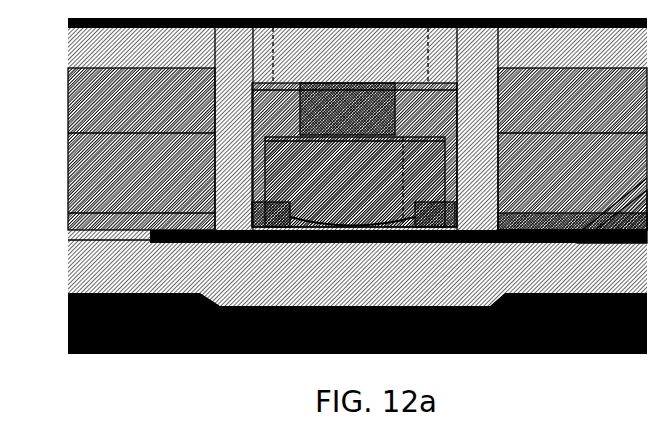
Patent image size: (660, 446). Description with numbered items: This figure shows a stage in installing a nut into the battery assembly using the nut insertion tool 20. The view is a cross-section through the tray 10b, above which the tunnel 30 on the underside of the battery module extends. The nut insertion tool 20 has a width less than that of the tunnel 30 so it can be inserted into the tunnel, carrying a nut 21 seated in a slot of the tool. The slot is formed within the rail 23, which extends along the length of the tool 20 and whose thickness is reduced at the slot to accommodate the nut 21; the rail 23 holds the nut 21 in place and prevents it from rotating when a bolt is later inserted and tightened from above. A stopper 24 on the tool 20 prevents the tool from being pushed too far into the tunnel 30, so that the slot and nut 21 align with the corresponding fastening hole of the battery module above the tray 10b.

The tray 10b is at (528, 62).
The nut insertion tool 20 is at (540, 213).
The nut 21 is at (423, 168).
The rail 23 is at (257, 208).
The stopper 24 is at (152, 241).
The tunnel 30 is at (457, 86).